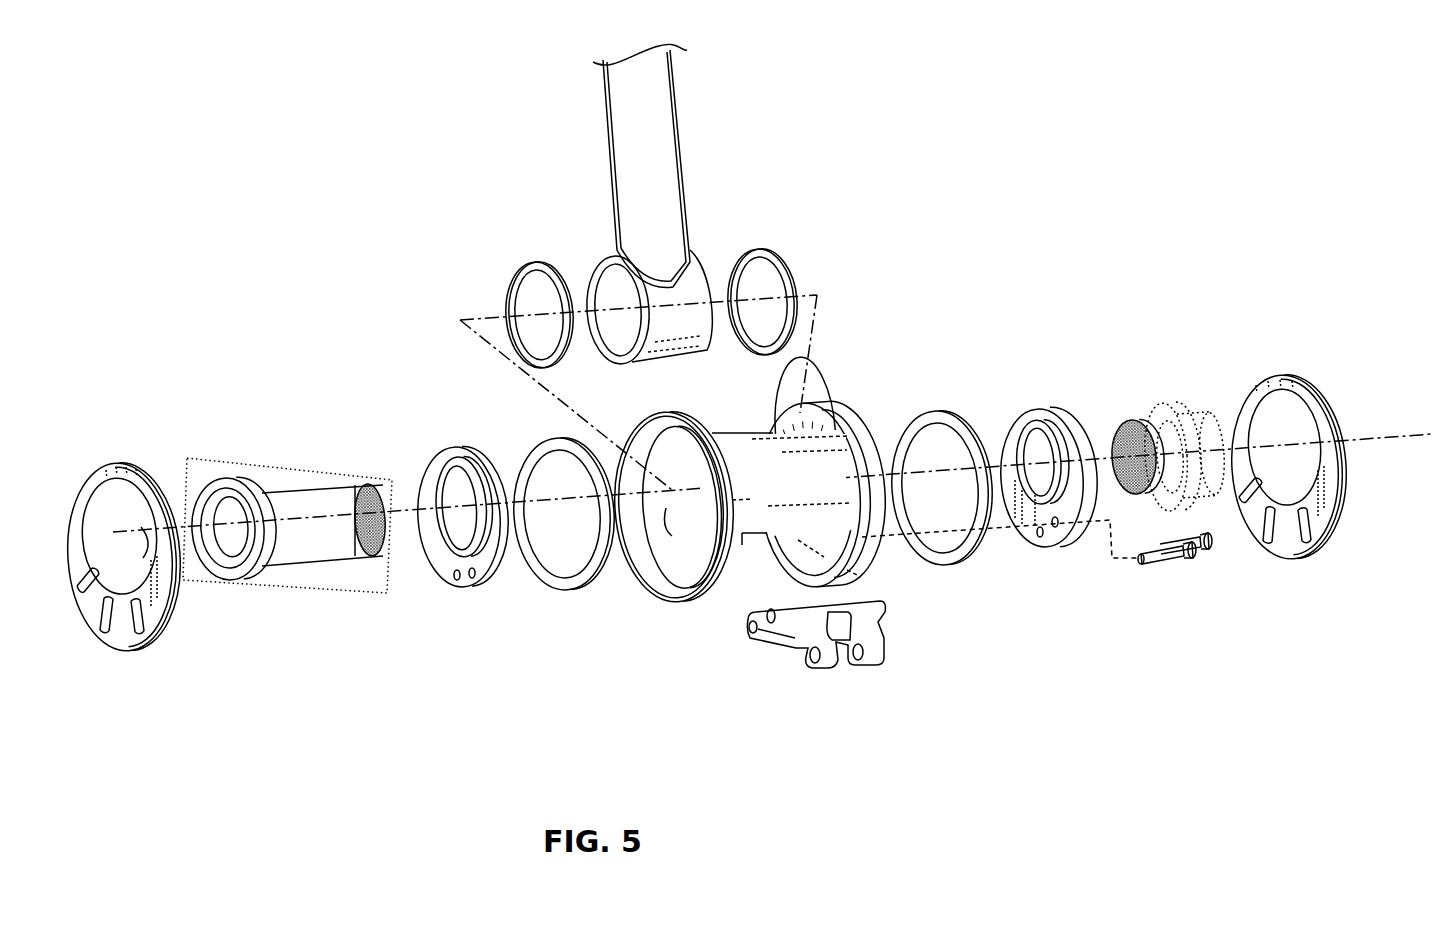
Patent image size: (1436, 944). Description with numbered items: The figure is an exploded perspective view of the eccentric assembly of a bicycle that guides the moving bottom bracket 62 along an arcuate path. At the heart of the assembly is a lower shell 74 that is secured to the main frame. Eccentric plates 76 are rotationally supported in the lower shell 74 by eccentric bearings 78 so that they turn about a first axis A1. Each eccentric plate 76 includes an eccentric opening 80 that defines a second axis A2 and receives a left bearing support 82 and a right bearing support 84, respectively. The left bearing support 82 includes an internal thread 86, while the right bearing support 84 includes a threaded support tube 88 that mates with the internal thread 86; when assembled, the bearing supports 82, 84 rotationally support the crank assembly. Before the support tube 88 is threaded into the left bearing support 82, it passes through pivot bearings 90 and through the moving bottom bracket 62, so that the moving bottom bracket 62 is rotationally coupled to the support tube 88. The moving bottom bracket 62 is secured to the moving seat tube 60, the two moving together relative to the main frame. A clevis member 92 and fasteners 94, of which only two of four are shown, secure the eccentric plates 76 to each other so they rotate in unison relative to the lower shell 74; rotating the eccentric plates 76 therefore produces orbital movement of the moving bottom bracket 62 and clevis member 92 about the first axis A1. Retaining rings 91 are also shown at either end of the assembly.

The moving seat tube 60 is at (648, 137).
The moving bottom bracket 62 is at (653, 340).
The lower shell 74 is at (785, 492).
The eccentric plates 76 is at (1060, 545).
The eccentric bearings 78 is at (575, 585).
The eccentric opening 80 is at (465, 490).
The left bearing support 82 is at (1177, 400).
The right bearing support 84 is at (240, 477).
The internal thread 86 is at (1137, 443).
The threaded support tube 88 is at (360, 483).
The pivot bearings 90 is at (518, 270).
The retaining clip 91 is at (133, 637).
The clevis member 92 is at (830, 667).
The fasteners 94 is at (1160, 567).
The first axis A1 is at (772, 490).
The second axis A2 is at (128, 551).